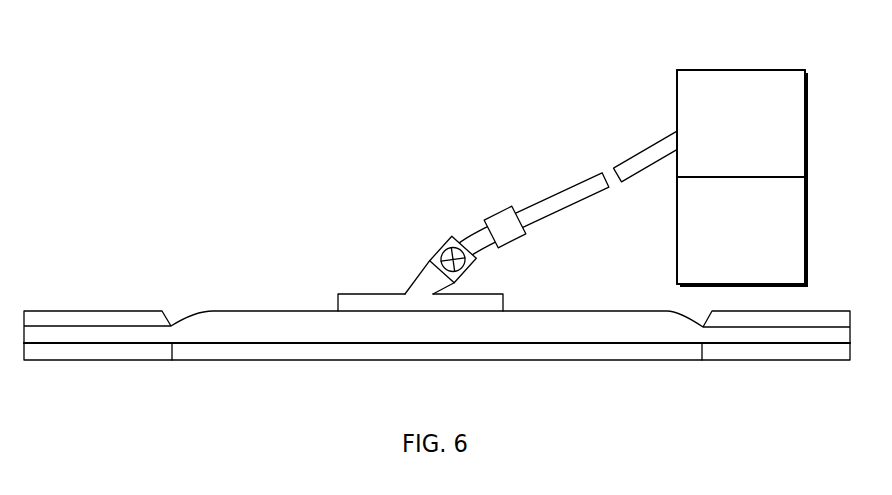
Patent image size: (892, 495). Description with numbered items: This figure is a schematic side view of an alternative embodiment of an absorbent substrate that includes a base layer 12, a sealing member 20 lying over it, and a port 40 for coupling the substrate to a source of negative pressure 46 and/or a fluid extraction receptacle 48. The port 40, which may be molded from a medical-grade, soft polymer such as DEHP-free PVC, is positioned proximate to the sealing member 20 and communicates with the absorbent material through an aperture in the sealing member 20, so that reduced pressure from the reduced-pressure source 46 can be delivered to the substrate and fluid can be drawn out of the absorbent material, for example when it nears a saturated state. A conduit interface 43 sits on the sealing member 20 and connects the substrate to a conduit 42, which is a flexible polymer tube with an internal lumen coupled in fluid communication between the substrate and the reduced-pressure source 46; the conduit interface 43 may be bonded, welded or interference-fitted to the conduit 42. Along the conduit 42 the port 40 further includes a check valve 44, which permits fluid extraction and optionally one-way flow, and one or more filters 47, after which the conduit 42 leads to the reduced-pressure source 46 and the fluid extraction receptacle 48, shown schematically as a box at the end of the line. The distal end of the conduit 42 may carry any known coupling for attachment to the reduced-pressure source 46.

The base layer 12 is at (382, 360).
The sealing member 20 is at (211, 310).
The port 40 is at (348, 212).
The conduit 42 is at (423, 275).
The conduit interface 43 is at (338, 294).
The check valve 44 is at (470, 268).
The reduced-pressure source 46 is at (731, 174).
The filter 47 is at (498, 220).
The fluid extraction receptacle 48 is at (731, 280).